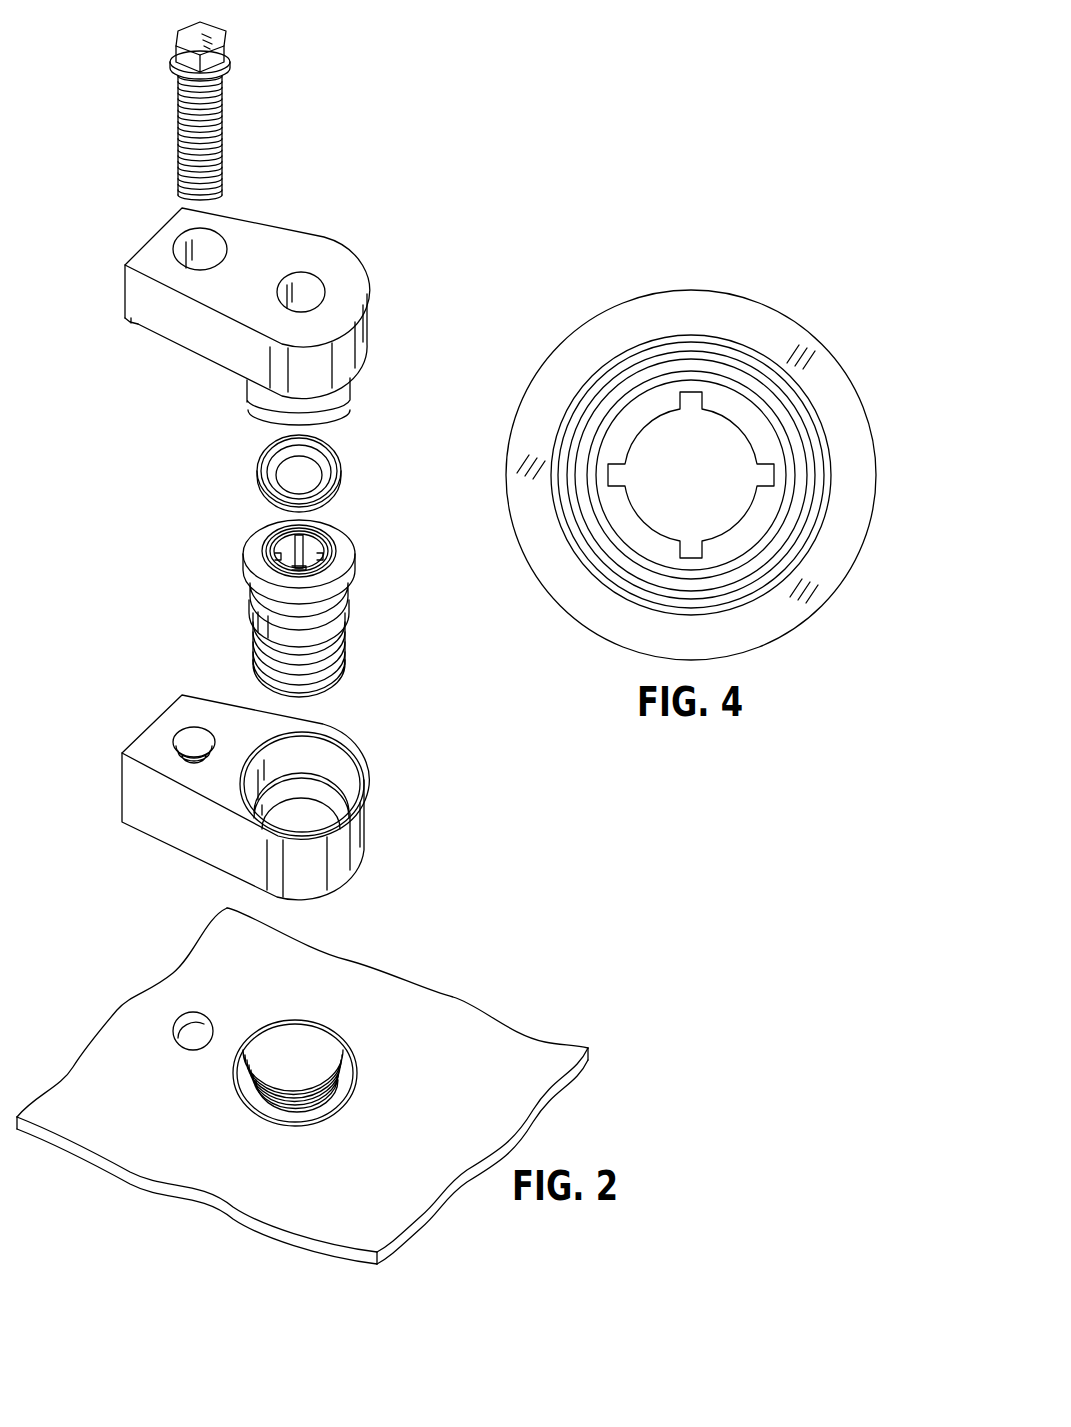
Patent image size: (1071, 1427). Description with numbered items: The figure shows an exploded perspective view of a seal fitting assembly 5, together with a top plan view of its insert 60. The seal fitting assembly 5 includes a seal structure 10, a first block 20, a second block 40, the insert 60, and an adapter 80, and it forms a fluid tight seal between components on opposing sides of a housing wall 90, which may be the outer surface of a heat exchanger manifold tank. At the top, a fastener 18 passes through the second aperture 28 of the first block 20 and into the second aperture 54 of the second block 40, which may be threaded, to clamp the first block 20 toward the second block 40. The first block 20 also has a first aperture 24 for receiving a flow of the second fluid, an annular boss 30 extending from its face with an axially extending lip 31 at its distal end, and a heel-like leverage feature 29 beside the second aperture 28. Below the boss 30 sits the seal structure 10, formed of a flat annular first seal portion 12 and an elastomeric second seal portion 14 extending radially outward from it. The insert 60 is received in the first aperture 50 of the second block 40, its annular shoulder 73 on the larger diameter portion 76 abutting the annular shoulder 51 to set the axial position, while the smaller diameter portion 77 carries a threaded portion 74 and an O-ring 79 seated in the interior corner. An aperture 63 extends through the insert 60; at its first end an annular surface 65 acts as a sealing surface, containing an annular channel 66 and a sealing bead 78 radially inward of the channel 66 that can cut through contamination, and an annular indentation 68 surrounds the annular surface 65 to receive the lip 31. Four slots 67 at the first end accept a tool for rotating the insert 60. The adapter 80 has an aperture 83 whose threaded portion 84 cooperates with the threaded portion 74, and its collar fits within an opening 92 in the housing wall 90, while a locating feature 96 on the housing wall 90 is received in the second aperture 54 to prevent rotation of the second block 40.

In FIG. 2, the seal fitting assembly 5 is at (405, 193).
In FIG. 2, the seal structure 10 is at (326, 459).
In FIG. 2, the first seal portion 12 is at (275, 470).
In FIG. 2, the second seal portion 14 is at (338, 480).
In FIG. 2, the fastener 18 is at (245, 115).
In FIG. 2, the first block 20 is at (258, 294).
In FIG. 2, the first aperture 24 is at (312, 292).
In FIG. 2, the second aperture 28 is at (213, 245).
In FIG. 2, the leverage feature 29 is at (128, 325).
In FIG. 2, the annular boss 30 is at (360, 375).
In FIG. 2, the lip 31 is at (350, 398).
In FIG. 2, the second block 40 is at (295, 773).
In FIG. 2, the first aperture 50 is at (307, 755).
In FIG. 2, the annular shoulder 51 is at (317, 778).
In FIG. 2, the second aperture 54 is at (188, 730).
In FIG. 2, the insert 60 is at (295, 585).
In FIG. 4, the insert 60 is at (682, 448).
In FIG. 2, the aperture 63 is at (285, 547).
In FIG. 4, the aperture 63 is at (738, 525).
In FIG. 2, the annular surface 65 is at (263, 553).
In FIG. 4, the annular surface 65 is at (572, 507).
In FIG. 4, the annular channel 66 is at (633, 380).
In FIG. 4, the slots 67 is at (612, 477).
In FIG. 4, the annular indentation 68 is at (745, 327).
In FIG. 2, the annular shoulder 73 is at (352, 603).
In FIG. 2, the threaded portion 74 is at (250, 643).
In FIG. 2, the larger diameter portion 76 is at (357, 578).
In FIG. 2, the smaller diameter portion 77 is at (348, 647).
In FIG. 4, the sealing bead 78 is at (778, 437).
In FIG. 2, the O-ring 79 is at (248, 607).
In FIG. 2, the adapter 80 is at (332, 1035).
In FIG. 2, the aperture 83 is at (290, 1052).
In FIG. 2, the threaded portion 84 is at (289, 1036).
In FIG. 2, the housing wall 90 is at (306, 1086).
In FIG. 2, the opening 92 is at (358, 1072).
In FIG. 2, the locating feature 96 is at (177, 1018).